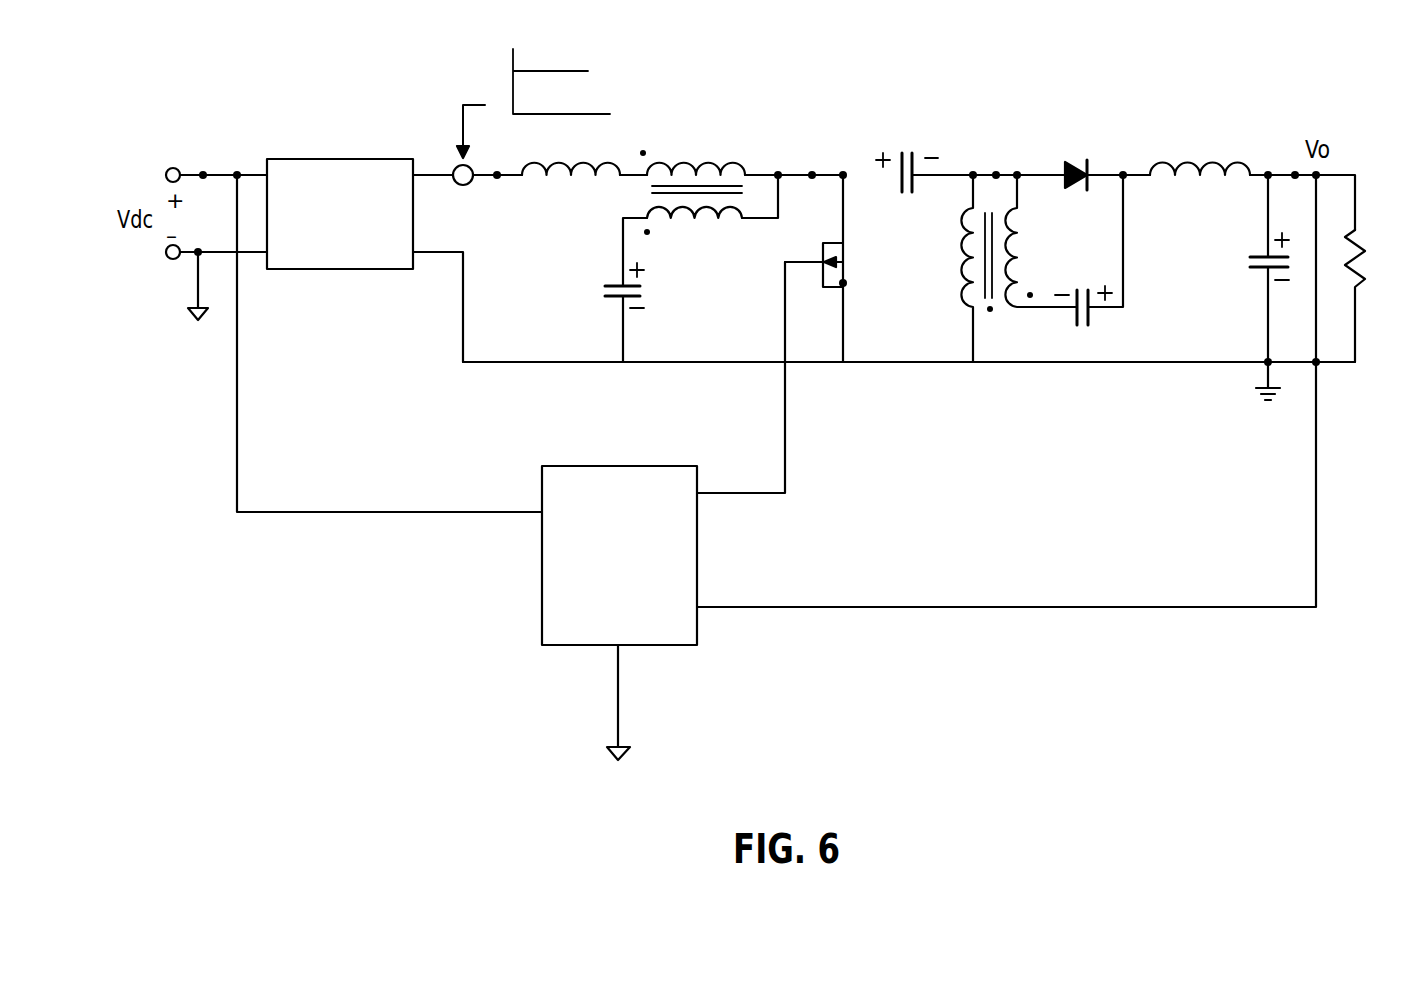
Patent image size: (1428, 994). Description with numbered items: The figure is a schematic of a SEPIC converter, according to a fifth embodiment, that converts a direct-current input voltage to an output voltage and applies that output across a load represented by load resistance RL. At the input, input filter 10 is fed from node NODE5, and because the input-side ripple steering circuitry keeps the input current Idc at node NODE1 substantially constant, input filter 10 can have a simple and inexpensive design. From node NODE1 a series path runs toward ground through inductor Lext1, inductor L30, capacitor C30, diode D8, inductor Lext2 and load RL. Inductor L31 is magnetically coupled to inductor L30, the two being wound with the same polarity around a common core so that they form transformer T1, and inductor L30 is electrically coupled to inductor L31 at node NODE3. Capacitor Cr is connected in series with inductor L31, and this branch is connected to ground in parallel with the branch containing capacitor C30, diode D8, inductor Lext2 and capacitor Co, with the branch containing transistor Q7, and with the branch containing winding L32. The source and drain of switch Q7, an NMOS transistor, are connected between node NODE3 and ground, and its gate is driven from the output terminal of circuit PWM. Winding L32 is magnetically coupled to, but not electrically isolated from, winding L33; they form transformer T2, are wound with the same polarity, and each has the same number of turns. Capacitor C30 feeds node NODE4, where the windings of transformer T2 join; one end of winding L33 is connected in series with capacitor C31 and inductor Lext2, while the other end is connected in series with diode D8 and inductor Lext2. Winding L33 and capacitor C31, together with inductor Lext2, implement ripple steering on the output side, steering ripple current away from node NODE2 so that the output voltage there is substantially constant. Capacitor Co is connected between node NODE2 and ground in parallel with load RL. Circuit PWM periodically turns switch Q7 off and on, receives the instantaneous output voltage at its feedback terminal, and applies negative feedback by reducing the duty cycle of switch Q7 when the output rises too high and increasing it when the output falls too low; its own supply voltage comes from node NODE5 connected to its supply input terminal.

The input filter 10 is at (312, 158).
The input current Idc is at (531, 117).
The Node 1 NODE1 is at (497, 180).
The Node 2 NODE2 is at (1295, 170).
The Node 3 NODE3 is at (812, 170).
The Node 4 NODE4 is at (996, 170).
The Node 5 NODE5 is at (203, 172).
The inductor Lext1 is at (571, 151).
The inductor Lext2 is at (1200, 140).
The transformer T1 is at (692, 161).
The inductor L30 is at (730, 162).
The inductor L31 is at (688, 215).
The capacitor Cr is at (613, 303).
The switch Q7 is at (832, 266).
The capacitor C30 is at (907, 156).
The transformer T2 is at (1001, 251).
The winding L32 is at (967, 207).
The winding L33 is at (1008, 203).
The capacitor C31 is at (1083, 290).
The diode D8 is at (1075, 157).
The capacitor Co is at (1257, 268).
The load resistance RL is at (1375, 296).
The circuit PWM is at (619, 613).